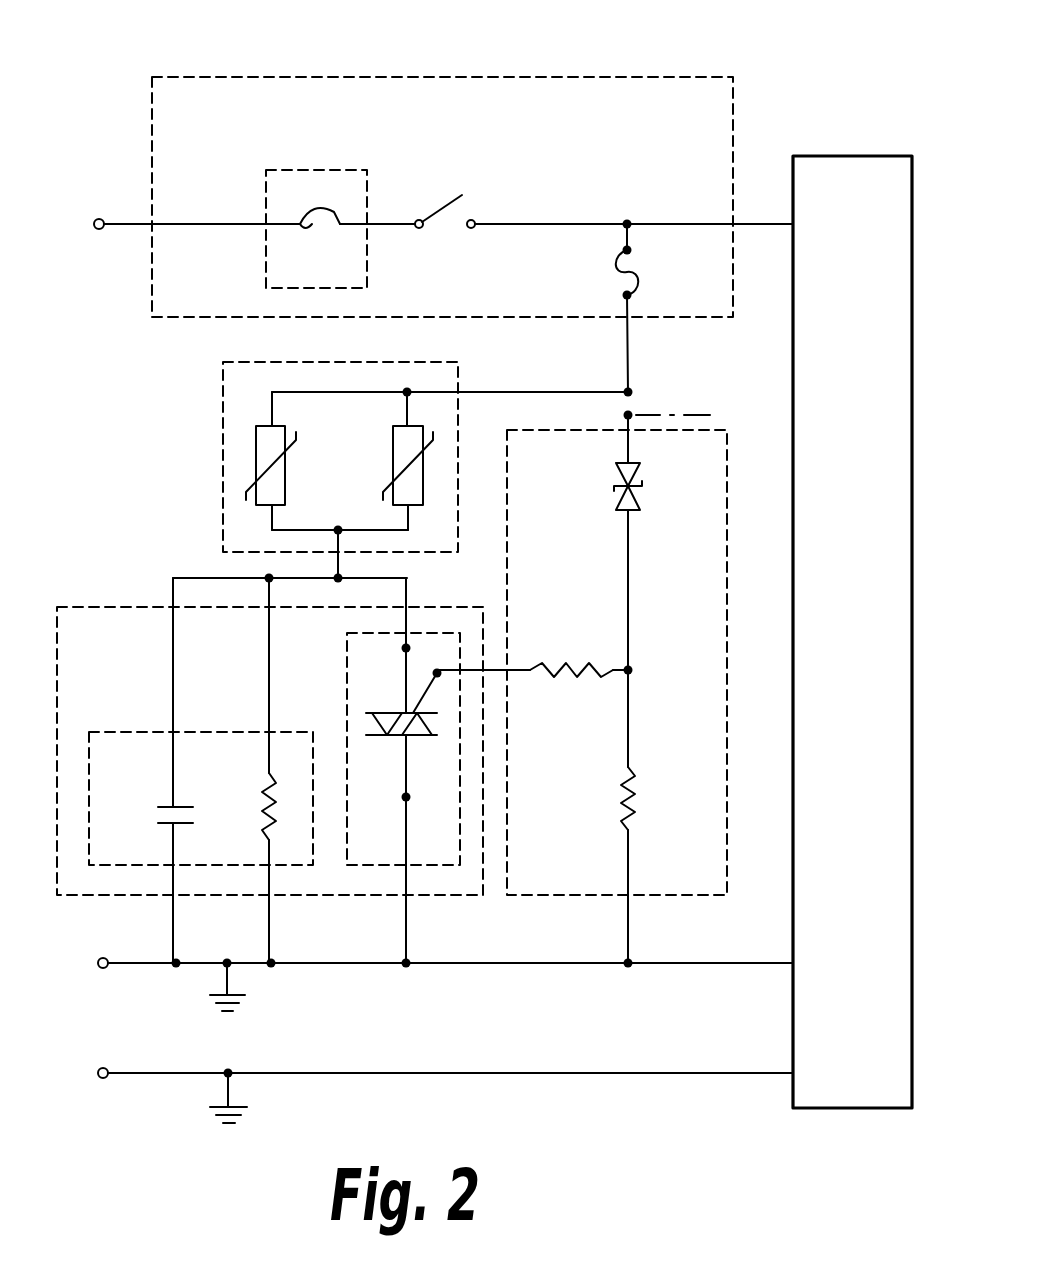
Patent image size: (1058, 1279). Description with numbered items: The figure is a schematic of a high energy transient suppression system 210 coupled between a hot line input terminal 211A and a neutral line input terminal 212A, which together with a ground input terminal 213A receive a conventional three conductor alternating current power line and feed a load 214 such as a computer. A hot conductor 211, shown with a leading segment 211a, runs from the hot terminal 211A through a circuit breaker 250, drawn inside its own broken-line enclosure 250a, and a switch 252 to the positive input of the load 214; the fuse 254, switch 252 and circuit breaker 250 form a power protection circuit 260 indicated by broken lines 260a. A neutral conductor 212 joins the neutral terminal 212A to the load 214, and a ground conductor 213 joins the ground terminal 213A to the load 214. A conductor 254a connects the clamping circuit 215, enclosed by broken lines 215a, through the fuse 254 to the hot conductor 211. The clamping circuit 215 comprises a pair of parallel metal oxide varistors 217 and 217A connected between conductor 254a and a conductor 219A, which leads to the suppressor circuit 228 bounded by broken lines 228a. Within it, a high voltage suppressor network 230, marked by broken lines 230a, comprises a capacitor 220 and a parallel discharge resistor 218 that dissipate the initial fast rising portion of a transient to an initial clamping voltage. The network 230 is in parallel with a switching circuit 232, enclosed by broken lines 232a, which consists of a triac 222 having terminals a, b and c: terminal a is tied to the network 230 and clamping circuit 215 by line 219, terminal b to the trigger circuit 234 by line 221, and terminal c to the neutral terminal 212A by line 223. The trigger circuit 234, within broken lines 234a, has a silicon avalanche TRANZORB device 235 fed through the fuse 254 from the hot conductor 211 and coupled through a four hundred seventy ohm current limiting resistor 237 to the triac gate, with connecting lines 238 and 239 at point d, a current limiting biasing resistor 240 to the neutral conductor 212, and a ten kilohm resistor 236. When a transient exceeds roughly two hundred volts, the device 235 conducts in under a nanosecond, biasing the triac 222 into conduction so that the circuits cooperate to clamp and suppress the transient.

The high energy suppression system 210 is at (125, 535).
The hot conductor 211 is at (548, 224).
The hot line input terminal 211A is at (100, 230).
The line conductor segment 211a is at (235, 224).
The neutral conductor 212 is at (588, 965).
The neutral line input terminal 212A is at (130, 988).
The ground conductor 213 is at (630, 1075).
The ground input terminal 213A is at (104, 1078).
The load 214 is at (841, 156).
The clamping circuit 215 is at (366, 437).
The broken lines 215a is at (435, 362).
The metal oxide varistor 217 is at (425, 426).
The metal oxide varistor 217A is at (245, 460).
The discharge resistor 218 is at (268, 806).
The line 219 is at (213, 578).
The conductor 219A is at (345, 565).
The capacitor 220 is at (166, 805).
The line 221 is at (505, 660).
The triac 222 is at (425, 740).
The line 223 is at (370, 914).
The suppressor circuit 228 is at (270, 762).
The broken lines 228a is at (62, 900).
The high voltage suppressor network 230 is at (210, 770).
The broken lines 230a is at (157, 728).
The switching circuit 232 is at (395, 770).
The broken lines 232a is at (440, 866).
The trigger circuit 234 is at (689, 653).
The broken lines 234a is at (732, 638).
The TRANZORB device 235 is at (645, 478).
The resistor 236 is at (630, 816).
The current limiting resistor 237 is at (556, 680).
The conductor 238 is at (614, 680).
The conductor 239 is at (634, 726).
The current limiting biasing resistor 240 is at (630, 935).
The circuit breaker 250 is at (362, 212).
The circuit breaker boundary 250a is at (367, 228).
The switch 252 is at (445, 200).
The fuse 254 is at (620, 272).
The conductor 254a is at (512, 392).
The power protection circuit 260 is at (403, 163).
The broken lines 260a is at (640, 77).